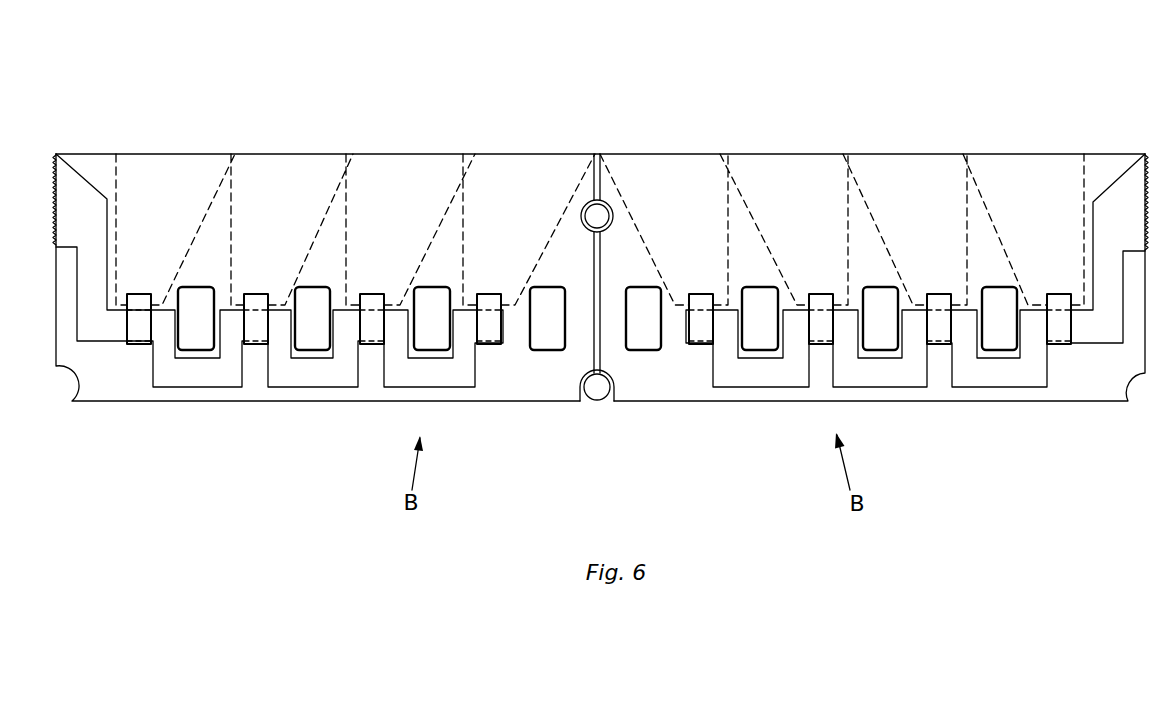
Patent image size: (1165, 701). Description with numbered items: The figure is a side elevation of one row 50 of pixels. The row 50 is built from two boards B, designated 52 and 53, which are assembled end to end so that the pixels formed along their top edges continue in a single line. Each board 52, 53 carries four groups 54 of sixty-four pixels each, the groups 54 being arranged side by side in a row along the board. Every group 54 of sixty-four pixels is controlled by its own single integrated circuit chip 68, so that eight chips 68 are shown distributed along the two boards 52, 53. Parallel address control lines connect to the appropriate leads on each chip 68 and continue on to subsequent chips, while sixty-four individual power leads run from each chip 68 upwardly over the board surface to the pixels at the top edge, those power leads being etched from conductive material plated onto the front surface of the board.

The row of pixels 50 is at (688, 100).
The board 52 is at (948, 402).
The board 53 is at (508, 402).
The group of pixels 54 is at (147, 212).
The integrated circuit chip 68 is at (135, 323).